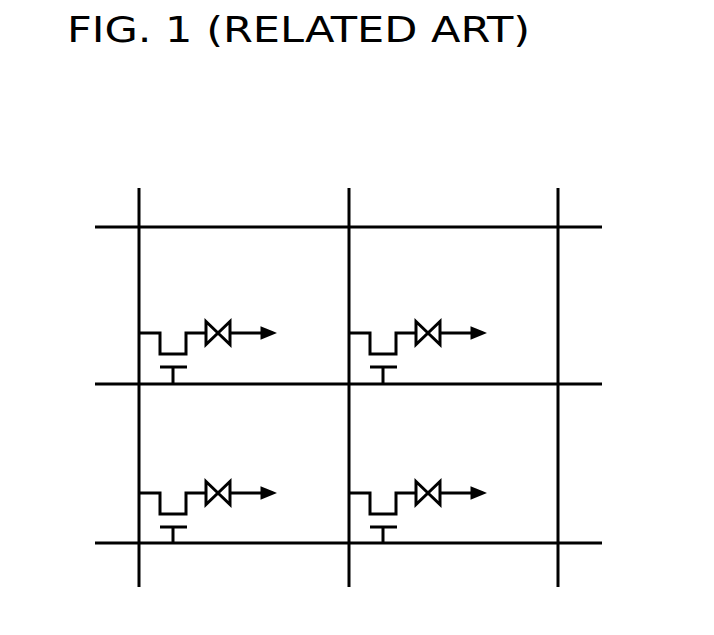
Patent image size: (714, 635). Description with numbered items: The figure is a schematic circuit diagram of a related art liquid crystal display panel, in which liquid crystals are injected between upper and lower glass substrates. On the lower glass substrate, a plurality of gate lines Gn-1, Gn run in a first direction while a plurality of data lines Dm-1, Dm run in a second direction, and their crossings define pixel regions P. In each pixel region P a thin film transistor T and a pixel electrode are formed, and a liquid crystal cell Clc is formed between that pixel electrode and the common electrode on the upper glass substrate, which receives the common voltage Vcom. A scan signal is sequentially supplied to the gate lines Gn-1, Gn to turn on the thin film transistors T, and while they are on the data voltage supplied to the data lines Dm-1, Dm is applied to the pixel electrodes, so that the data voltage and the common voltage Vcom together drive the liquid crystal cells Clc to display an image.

The data line Dm-1 is at (137, 362).
The data line Dm is at (357, 363).
The gate line Gn-1 is at (306, 222).
The gate line Gn is at (323, 380).
The pixel region P is at (236, 246).
The thin film transistor T is at (277, 416).
The liquid crystal cell Clc is at (333, 393).
The common voltage Vcom is at (394, 411).